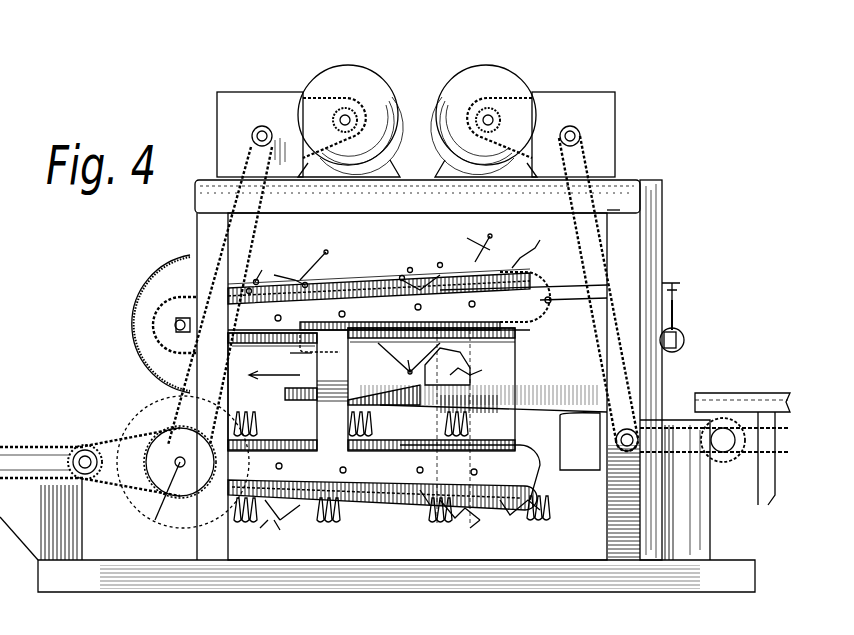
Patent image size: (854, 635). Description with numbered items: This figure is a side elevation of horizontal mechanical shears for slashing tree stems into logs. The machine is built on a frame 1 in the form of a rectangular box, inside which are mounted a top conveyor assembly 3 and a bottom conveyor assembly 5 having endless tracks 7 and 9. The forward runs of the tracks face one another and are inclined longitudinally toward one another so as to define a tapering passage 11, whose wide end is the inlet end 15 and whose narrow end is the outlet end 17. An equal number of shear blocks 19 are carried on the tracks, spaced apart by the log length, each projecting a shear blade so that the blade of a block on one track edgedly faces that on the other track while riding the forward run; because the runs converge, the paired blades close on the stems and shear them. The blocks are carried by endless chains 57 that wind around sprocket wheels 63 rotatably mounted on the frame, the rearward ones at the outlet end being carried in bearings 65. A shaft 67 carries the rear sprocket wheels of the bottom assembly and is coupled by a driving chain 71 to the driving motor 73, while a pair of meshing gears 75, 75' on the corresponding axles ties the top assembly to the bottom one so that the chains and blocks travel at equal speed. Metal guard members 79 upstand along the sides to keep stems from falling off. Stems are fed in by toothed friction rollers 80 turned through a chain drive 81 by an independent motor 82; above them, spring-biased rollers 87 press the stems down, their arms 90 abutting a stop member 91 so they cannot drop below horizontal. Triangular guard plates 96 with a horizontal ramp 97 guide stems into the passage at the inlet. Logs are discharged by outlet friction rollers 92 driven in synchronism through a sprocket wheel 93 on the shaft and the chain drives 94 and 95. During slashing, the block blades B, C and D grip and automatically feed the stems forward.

The frame 1 is at (622, 185).
The top conveyor assembly 3 is at (402, 290).
The bottom conveyor assembly 5 is at (334, 542).
The endless track 7 is at (360, 286).
The endless track 9 is at (390, 492).
The tapering passage 11 is at (592, 361).
The inlet end 15 is at (664, 368).
The outlet end 17 is at (186, 392).
The shear blocks 19 is at (285, 262).
The endless chains 57 is at (462, 340).
The sprocket wheels 63 is at (178, 310).
The bearings 65 is at (175, 325).
The shaft 67 is at (156, 520).
The driving chain 71 is at (252, 140).
The driving motor 73 is at (352, 78).
The meshing gear 75 is at (178, 474).
The meshing gear 75' is at (161, 306).
The guard members 79 is at (350, 428).
The friction rollers 80 is at (600, 445).
The chain drive 81 is at (640, 395).
The motor 82 is at (470, 74).
The rollers 87 is at (685, 338).
The arms 90 is at (676, 303).
The stop member 91 is at (672, 282).
The outlet friction rollers 92 is at (78, 456).
The sprocket wheel 93 is at (190, 485).
The chain drive 94 is at (108, 478).
The chain drive 95 is at (30, 480).
The guard plates 96 is at (536, 385).
The horizontal ramp 97 is at (530, 412).
The blades B is at (425, 365).
The blades C is at (472, 385).
The blades D is at (285, 390).